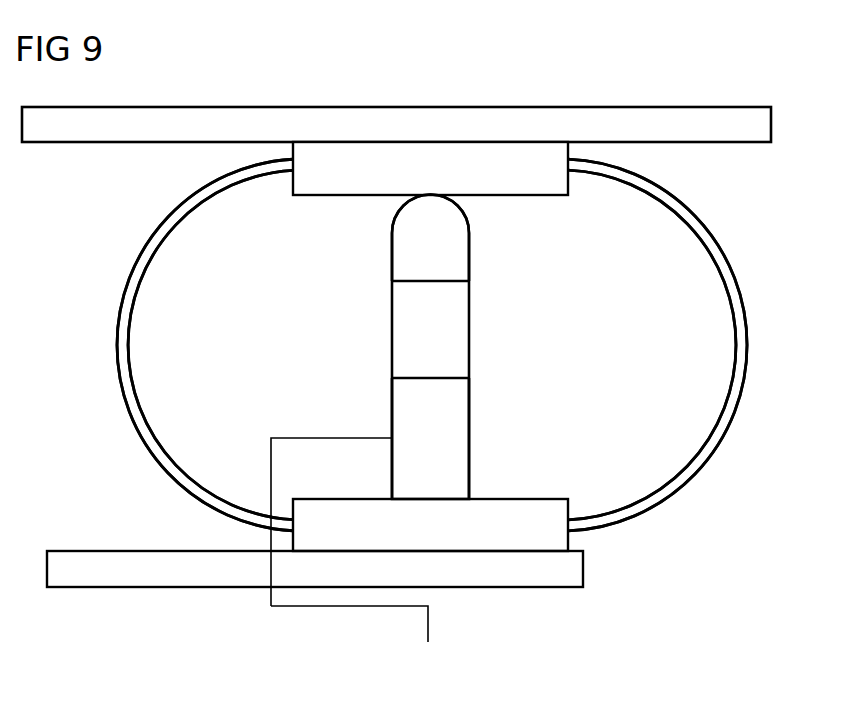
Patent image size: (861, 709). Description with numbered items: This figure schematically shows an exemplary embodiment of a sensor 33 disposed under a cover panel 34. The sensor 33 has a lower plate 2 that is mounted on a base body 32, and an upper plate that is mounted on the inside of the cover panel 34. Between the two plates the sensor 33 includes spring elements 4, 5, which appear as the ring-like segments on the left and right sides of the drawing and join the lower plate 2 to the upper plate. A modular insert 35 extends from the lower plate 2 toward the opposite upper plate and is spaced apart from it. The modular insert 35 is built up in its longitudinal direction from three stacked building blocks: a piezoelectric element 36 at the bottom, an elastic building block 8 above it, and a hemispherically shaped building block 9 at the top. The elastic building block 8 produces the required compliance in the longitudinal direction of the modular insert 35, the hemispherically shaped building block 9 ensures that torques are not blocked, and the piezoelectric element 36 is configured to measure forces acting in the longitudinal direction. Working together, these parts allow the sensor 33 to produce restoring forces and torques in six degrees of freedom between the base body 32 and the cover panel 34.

The lower plate 2 is at (552, 498).
The spring element 4 is at (123, 349).
The spring element 5 is at (741, 344).
The elastic building block 8 is at (441, 339).
The hemispherically shaped building block 9 is at (441, 263).
The base body 32 is at (148, 588).
The sensor 33 is at (749, 250).
The cover panel 34 is at (178, 106).
The modular insert 35 is at (284, 327).
The piezoelectric element 36 is at (441, 417).